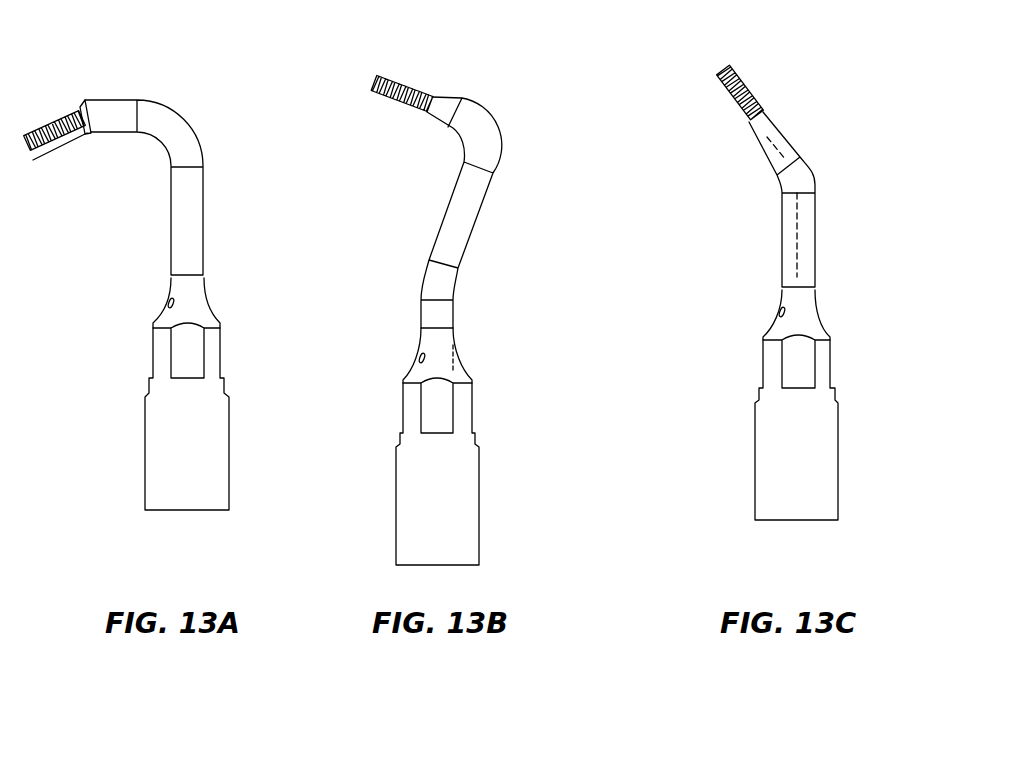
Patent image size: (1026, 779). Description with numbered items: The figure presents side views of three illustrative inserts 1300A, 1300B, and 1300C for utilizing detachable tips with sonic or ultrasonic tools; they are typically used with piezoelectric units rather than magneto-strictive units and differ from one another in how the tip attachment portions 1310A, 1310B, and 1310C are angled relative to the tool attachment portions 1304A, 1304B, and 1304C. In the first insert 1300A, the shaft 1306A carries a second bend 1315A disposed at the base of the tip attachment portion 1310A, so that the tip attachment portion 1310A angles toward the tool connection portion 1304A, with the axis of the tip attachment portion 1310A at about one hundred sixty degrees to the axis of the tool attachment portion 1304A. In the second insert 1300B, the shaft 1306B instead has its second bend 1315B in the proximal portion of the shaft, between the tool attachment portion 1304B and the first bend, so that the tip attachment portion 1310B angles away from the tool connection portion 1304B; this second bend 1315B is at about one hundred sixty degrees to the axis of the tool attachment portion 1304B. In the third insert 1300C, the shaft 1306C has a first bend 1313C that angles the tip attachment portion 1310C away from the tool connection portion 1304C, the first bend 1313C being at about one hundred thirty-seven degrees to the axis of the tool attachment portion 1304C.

In FIG. 13A, the insert 1300A is at (161, 269).
In FIG. 13A, the tool attachment portion 1304A is at (172, 441).
In FIG. 13A, the shaft 1306A is at (190, 236).
In FIG. 13A, the tip attachment portion 1310A is at (50, 117).
In FIG. 13A, the second bend 1315A is at (137, 133).
In FIG. 13B, the insert 1300B is at (464, 291).
In FIG. 13B, the tool attachment portion 1304B is at (422, 493).
In FIG. 13B, the shaft 1306B is at (455, 237).
In FIG. 13B, the tip attachment portion 1310B is at (395, 82).
In FIG. 13B, the second bend 1315B is at (486, 207).
In FIG. 13C, the insert 1300C is at (779, 284).
In FIG. 13C, the tool attachment portion 1304C is at (775, 443).
In FIG. 13C, the shaft 1306C is at (787, 268).
In FIG. 13C, the tip attachment portion 1310C is at (742, 79).
In FIG. 13C, the first bend 1313C is at (795, 252).